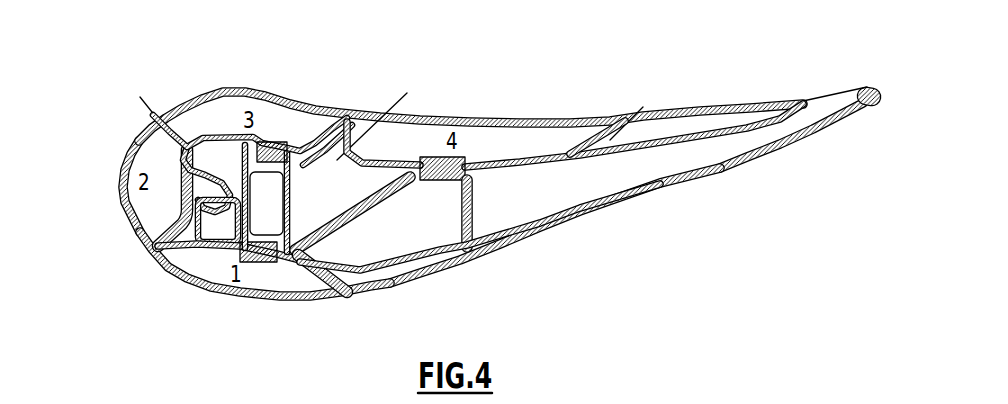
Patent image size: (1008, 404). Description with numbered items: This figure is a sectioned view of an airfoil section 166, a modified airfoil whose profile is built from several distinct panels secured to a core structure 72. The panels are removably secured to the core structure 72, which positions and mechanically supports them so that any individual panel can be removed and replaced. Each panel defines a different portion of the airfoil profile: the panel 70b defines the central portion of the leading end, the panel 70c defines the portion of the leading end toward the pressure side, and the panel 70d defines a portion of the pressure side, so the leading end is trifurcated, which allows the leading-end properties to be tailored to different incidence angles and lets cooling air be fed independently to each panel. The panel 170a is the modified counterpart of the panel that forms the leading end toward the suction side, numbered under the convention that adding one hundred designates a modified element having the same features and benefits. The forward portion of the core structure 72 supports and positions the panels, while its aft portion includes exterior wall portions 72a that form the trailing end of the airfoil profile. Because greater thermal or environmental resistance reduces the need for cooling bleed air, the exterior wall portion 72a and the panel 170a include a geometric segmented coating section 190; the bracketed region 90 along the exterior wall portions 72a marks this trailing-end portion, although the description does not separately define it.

The airfoil section 166 is at (253, 90).
The panel 70b is at (123, 158).
The panel 70c is at (298, 105).
The panel 70d is at (496, 118).
The cooling cavity 170a is at (168, 276).
The core structure 72 is at (722, 175).
The exterior wall portions 72a is at (626, 202).
The trailing edge portion 90 is at (382, 322).
The geometric segmented coating section 190 is at (140, 302).